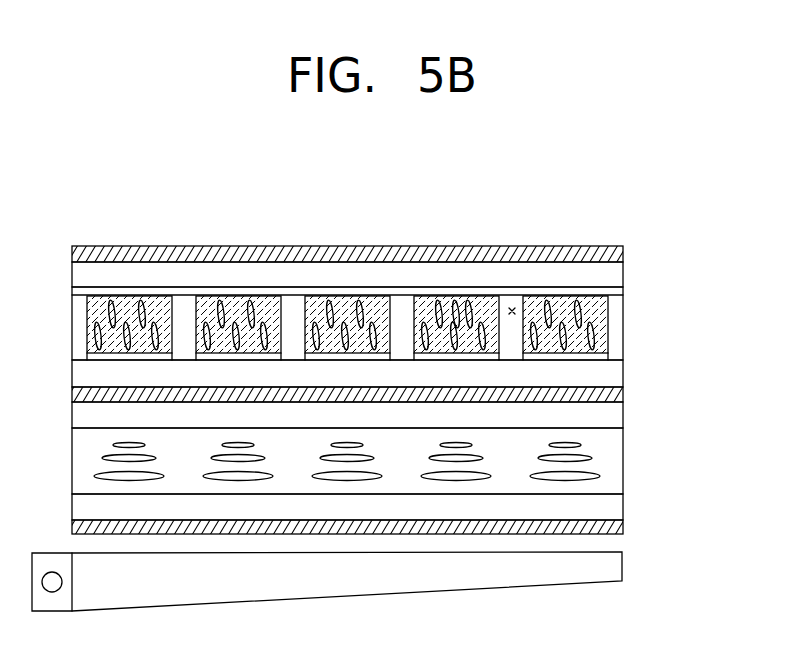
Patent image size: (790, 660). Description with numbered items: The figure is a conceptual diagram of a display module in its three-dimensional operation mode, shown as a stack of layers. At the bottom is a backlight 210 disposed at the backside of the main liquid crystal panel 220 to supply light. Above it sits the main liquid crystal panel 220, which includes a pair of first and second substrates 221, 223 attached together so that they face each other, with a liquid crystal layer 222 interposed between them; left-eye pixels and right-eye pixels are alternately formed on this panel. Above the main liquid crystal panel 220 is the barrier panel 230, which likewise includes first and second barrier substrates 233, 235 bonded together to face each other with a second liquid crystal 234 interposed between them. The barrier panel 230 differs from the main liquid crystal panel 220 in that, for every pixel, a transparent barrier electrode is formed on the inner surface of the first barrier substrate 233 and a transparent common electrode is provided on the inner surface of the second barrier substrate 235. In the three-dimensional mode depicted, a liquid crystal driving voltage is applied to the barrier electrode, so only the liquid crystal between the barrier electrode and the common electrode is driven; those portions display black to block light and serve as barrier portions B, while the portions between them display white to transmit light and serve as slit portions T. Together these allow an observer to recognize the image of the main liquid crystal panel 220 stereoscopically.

The backlight 210 is at (618, 565).
The main liquid crystal panel 220 is at (405, 460).
The first substrate 221 is at (381, 507).
The liquid crystal layer 222 is at (617, 465).
The second substrate 223 is at (617, 416).
The barrier panel 230 is at (405, 316).
The first barrier substrate 233 is at (381, 372).
The second liquid crystal 234 is at (617, 327).
The second barrier substrate 235 is at (617, 279).
The barrier portions B is at (456, 302).
The slit portions T is at (512, 306).